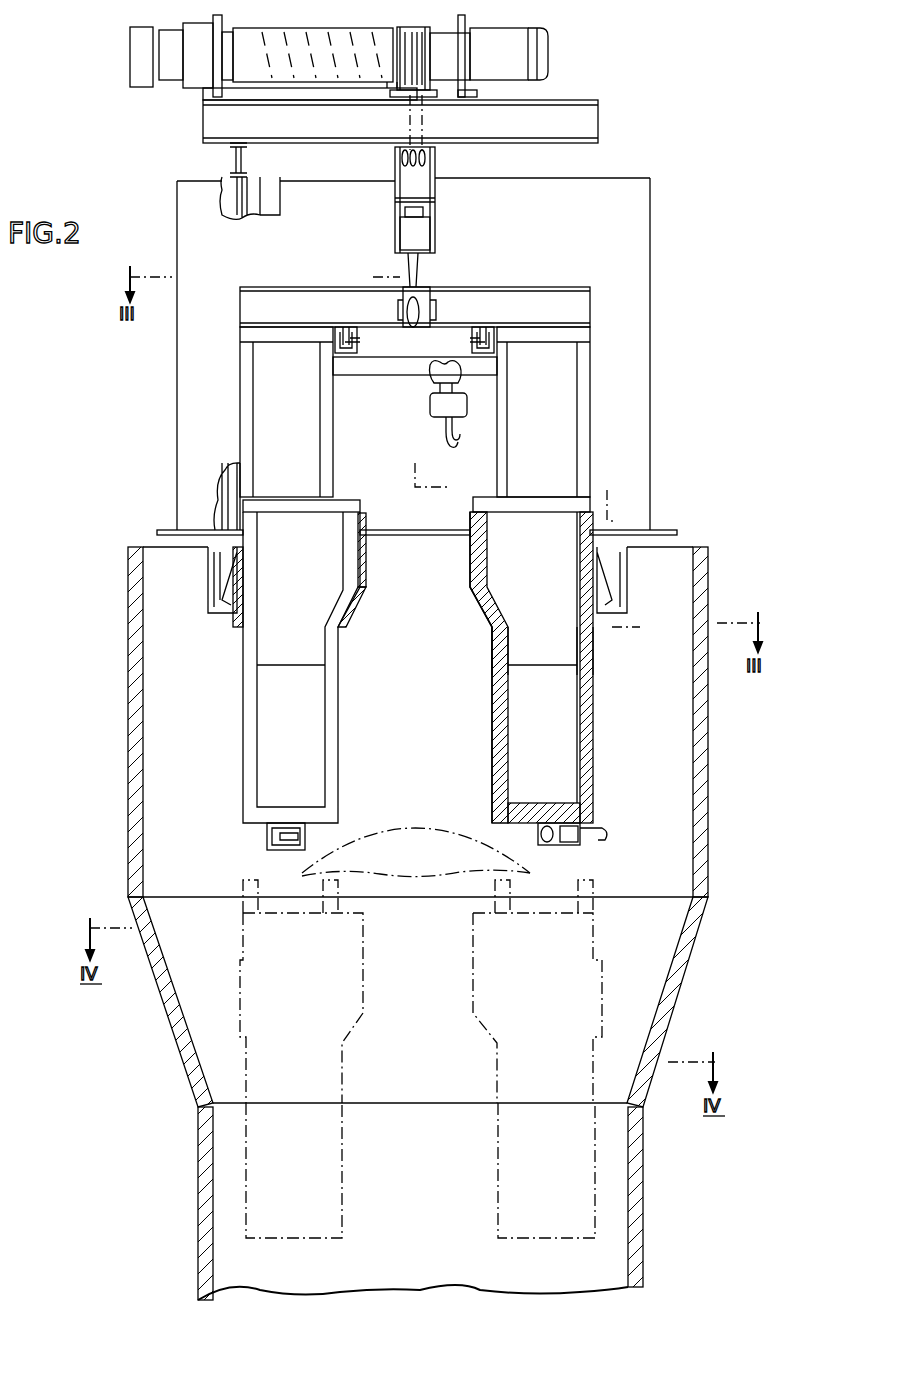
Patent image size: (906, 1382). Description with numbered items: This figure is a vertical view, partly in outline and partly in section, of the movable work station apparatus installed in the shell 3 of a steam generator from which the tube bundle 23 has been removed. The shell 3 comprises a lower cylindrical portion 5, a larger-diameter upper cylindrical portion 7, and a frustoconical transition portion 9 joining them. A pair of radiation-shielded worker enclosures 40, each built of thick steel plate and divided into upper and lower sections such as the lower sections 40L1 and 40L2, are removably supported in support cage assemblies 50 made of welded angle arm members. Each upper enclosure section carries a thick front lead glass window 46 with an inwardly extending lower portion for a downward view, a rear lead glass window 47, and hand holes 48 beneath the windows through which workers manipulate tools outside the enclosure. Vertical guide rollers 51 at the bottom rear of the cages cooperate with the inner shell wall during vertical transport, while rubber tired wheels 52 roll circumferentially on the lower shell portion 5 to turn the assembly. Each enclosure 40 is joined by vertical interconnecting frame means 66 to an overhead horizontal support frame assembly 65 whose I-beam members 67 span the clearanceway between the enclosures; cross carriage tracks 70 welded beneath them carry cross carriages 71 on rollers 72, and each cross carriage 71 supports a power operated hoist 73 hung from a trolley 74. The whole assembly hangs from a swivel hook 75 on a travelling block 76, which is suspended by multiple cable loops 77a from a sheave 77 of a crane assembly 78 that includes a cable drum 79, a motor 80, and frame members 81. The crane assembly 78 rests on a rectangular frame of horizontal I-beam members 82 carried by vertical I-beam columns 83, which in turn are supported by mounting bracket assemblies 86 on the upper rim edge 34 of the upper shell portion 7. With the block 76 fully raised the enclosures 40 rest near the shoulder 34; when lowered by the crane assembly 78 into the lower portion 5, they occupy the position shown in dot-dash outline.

The shell 3 is at (178, 1045).
The lower cylindrical portion 5 is at (642, 1172).
The upper cylindrical portion 7 is at (700, 728).
The frustoconical transition portion 9 is at (680, 973).
The tube bundle 23 is at (520, 868).
The upper rim edge 34 is at (140, 548).
The radiation-shielded worker enclosure 40 is at (304, 638).
The lower enclosure section 40L1 is at (262, 765).
The lower enclosure section 40L2 is at (575, 768).
The lead glass window 46 is at (360, 565).
The lead glass window 47 is at (236, 608).
The hand hole 48 is at (497, 665).
The support cage assembly 50 is at (250, 690).
The vertical guide roller 51 is at (600, 832).
The rubber tired wheel 52 is at (268, 832).
The horizontal support frame assembly 65 is at (570, 290).
The vertical interconnecting frame means 66 is at (325, 404).
The I-beam member 67 is at (278, 296).
The cross carriage track 70 is at (345, 328).
The cross carriage 71 is at (362, 372).
The roller 72 is at (415, 338).
The power operated hoist 73 is at (440, 410).
The trolley 74 is at (432, 383).
The swivel hook 75 is at (418, 270).
The travelling block 76 is at (402, 185).
The sheave 77 is at (432, 40).
The cable loops 77a is at (412, 122).
The crane assembly 78 is at (518, 98).
The cable drum 79 is at (372, 38).
The motor 80 is at (552, 42).
The frame member 81 is at (592, 116).
The horizontal I-beam member 82 is at (247, 160).
The vertical I-beam column 83 is at (224, 185).
The mounting bracket assembly 86 is at (208, 572).